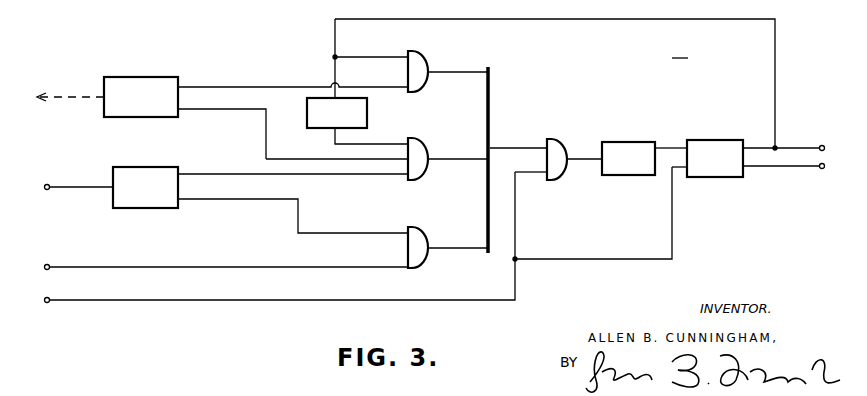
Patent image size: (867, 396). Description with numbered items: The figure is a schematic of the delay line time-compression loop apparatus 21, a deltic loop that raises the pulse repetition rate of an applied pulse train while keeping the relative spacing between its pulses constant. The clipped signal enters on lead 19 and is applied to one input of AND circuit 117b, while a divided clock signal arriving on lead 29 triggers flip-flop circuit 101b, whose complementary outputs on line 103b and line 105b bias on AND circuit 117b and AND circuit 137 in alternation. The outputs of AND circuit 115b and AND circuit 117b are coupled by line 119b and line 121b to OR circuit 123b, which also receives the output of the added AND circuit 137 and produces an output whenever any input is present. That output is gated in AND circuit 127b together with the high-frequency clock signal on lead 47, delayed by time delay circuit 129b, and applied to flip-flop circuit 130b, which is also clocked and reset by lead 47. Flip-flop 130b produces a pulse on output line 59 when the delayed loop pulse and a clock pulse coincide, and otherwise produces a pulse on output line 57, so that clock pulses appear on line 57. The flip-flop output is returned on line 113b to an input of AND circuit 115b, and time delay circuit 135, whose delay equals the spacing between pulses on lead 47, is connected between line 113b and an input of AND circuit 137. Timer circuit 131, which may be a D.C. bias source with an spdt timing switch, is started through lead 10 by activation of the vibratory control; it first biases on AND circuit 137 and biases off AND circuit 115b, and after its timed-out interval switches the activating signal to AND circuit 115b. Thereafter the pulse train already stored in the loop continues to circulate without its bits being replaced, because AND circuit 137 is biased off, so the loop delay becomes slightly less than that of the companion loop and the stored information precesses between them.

The lead 10 is at (71, 96).
The lead 19 is at (83, 266).
The delay line time-compression loop apparatus 21 is at (680, 52).
The lead 29 is at (82, 186).
The lead 47 is at (97, 302).
The output line 57 is at (806, 168).
The output line 59 is at (803, 146).
The flip-flop circuit 101b is at (144, 167).
The line 103b is at (348, 233).
The line 105b is at (227, 173).
The line 113b is at (596, 19).
The AND circuit 115b is at (418, 44).
The AND circuit 117b is at (421, 218).
The line 119b is at (465, 72).
The line 121b is at (460, 249).
The OR circuit 123b is at (490, 100).
The AND circuit 127b is at (551, 146).
The time delay circuit 129b is at (626, 142).
The flip-flop circuit 130b is at (712, 140).
The timer circuit 131 is at (142, 79).
The time delay circuit 135 is at (307, 102).
The AND circuit 137 is at (418, 144).